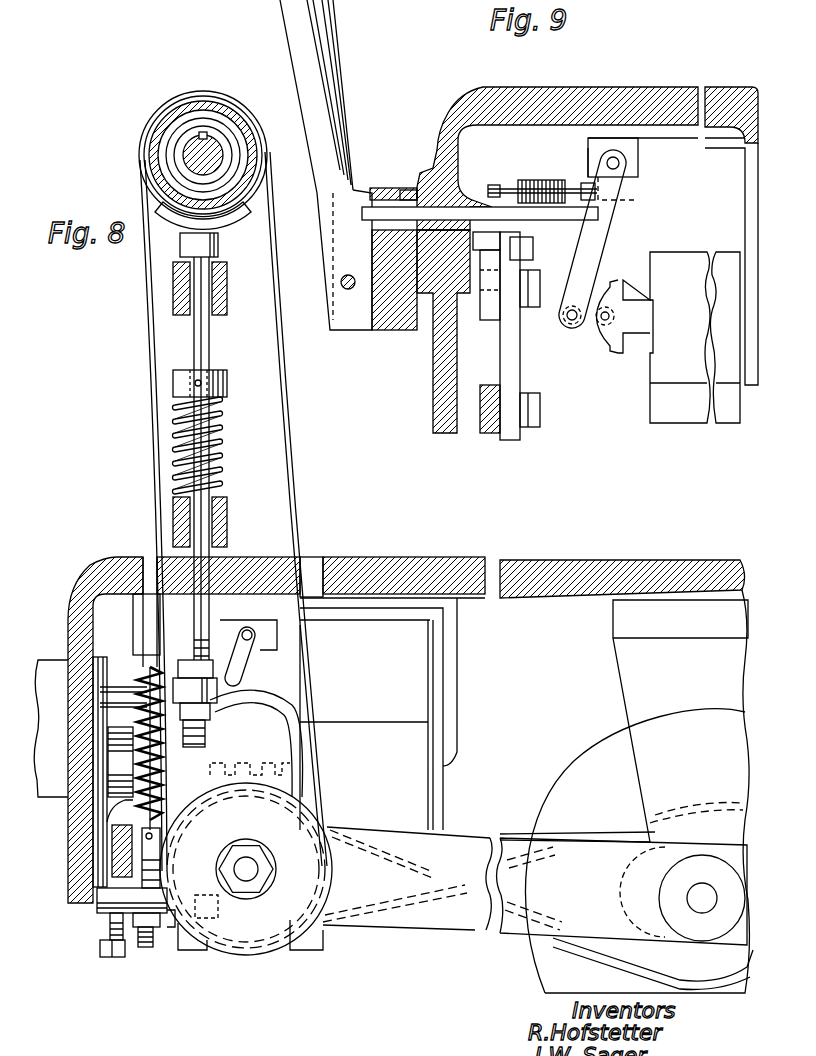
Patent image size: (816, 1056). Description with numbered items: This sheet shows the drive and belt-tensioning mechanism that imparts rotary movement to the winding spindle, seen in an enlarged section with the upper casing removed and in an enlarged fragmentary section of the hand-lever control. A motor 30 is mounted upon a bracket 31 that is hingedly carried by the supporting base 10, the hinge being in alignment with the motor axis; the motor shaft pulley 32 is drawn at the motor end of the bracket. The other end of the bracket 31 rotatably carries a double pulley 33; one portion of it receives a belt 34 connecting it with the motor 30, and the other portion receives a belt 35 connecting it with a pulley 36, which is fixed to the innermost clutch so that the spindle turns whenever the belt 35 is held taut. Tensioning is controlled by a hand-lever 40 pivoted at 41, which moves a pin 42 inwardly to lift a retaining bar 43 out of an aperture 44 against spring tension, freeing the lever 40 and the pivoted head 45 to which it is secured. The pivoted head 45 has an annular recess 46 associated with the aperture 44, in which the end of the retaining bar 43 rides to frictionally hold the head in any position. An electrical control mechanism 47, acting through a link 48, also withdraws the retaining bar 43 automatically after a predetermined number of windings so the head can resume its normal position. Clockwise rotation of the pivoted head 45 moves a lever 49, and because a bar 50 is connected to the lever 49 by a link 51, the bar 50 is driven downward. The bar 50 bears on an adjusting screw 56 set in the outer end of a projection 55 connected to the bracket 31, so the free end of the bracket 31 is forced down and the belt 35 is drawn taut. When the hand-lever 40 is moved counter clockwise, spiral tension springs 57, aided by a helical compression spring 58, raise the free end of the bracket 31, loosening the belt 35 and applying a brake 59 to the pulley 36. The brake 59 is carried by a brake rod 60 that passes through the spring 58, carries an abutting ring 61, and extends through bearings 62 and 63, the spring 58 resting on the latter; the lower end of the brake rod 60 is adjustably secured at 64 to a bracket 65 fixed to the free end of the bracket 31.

In FIG. 9, the supporting base 10 is at (598, 95).
In FIG. 8, the supporting base 10 is at (548, 567).
In FIG. 8, the motor 30 is at (587, 760).
In FIG. 8, the bracket 31 is at (513, 838).
In FIG. 8, the blade pulley 32 is at (702, 890).
In FIG. 8, the double pulley 33 is at (235, 913).
In FIG. 8, the belt 34 is at (413, 910).
In FIG. 8, the belt 35 is at (290, 487).
In FIG. 8, the pulley 36 is at (150, 138).
In FIG. 9, the hand-lever 40 is at (325, 57).
In FIG. 9, the pivot 41 is at (347, 307).
In FIG. 9, the pin 42 is at (380, 213).
In FIG. 9, the retaining bar 43 is at (485, 213).
In FIG. 8, the retaining bar 43 is at (115, 708).
In FIG. 9, the aperture 44 is at (407, 208).
In FIG. 9, the pivoted head 45 is at (397, 333).
In FIG. 8, the pivoted head 45 is at (43, 665).
In FIG. 9, the annular recess 46 is at (428, 337).
In FIG. 9, the electrical control mechanism 47 is at (668, 263).
In FIG. 8, the electrical control mechanism 47 is at (385, 737).
In FIG. 9, the link 48 is at (590, 257).
In FIG. 8, the link 48 is at (230, 653).
In FIG. 9, the lever 49 is at (493, 317).
In FIG. 8, the lever 49 is at (120, 815).
In FIG. 9, the bar 50 is at (497, 437).
In FIG. 8, the bar 50 is at (113, 870).
In FIG. 9, the link 51 is at (513, 350).
In FIG. 8, the link 51 is at (130, 840).
In FIG. 8, the projection 55 is at (143, 940).
In FIG. 8, the adjusting screw 56 is at (108, 933).
In FIG. 8, the spiral tension springs 57 is at (110, 863).
In FIG. 8, the helical compression spring 58 is at (220, 433).
In FIG. 8, the brake 59 is at (173, 227).
In FIG. 8, the brake rod 60 is at (192, 343).
In FIG. 8, the abutting ring 61 is at (175, 385).
In FIG. 8, the bearing 62 is at (175, 288).
In FIG. 8, the bearing 63 is at (230, 510).
In FIG. 8, the adjustable securing point 64 is at (233, 672).
In FIG. 8, the bracket 65 is at (277, 728).